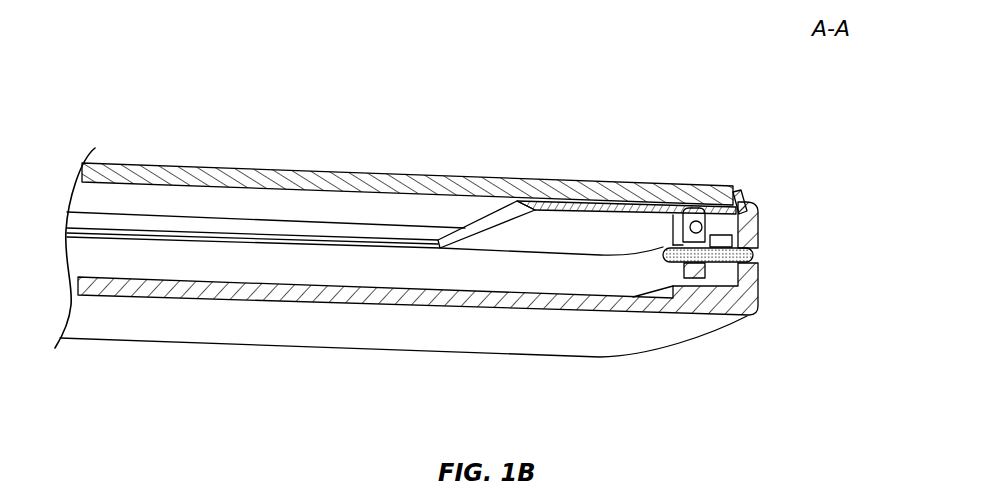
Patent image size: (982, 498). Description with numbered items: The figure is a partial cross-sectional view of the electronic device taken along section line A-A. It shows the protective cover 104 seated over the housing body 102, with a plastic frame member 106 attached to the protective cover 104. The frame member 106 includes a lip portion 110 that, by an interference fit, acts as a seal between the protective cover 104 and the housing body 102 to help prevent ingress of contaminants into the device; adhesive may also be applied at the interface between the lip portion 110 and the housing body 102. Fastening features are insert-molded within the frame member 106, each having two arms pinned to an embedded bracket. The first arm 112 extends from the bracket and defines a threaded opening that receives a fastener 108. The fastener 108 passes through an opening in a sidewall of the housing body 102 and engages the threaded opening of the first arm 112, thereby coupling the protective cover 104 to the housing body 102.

The housing body 102 is at (293, 334).
The protective cover 104 is at (263, 213).
The frame member 106 is at (593, 239).
The fastener 108 is at (758, 262).
The lip portion 110 is at (742, 195).
The first arm 112 is at (668, 270).